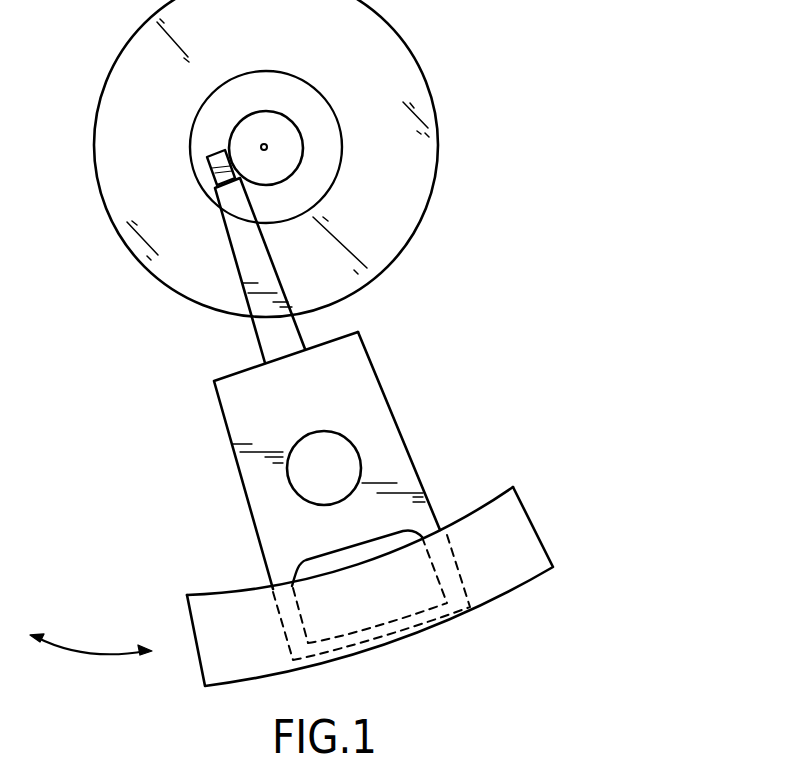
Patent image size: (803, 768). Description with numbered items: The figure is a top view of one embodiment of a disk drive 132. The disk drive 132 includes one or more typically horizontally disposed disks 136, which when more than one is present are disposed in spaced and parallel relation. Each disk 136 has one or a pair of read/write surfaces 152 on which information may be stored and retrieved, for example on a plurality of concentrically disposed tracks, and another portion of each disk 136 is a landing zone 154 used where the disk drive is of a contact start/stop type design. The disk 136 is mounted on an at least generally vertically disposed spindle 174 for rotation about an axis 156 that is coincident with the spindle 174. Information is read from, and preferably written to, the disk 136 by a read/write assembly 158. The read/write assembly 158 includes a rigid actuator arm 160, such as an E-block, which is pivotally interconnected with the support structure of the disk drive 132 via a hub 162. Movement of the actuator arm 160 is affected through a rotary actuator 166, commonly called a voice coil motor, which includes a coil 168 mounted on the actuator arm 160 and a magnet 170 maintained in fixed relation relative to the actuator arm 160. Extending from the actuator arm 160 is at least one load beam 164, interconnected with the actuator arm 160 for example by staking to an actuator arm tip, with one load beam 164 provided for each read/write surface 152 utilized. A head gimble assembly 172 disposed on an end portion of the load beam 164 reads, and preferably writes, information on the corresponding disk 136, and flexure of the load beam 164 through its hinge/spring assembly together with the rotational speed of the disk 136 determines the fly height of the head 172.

The disk drive 132 is at (376, 347).
The disk 136 is at (301, 158).
The read/write surface 152 is at (382, 203).
The landing zone 154 is at (280, 200).
The axis 156 is at (268, 145).
The read/write assembly 158 is at (372, 460).
The actuator arm 160 is at (420, 482).
The hub 162 is at (310, 470).
The load beam 164 is at (273, 333).
The rotary actuator 166 is at (423, 572).
The coil 168 is at (437, 613).
The magnet 170 is at (527, 570).
The head gimble assembly 172 is at (210, 163).
The spindle 174 is at (303, 152).